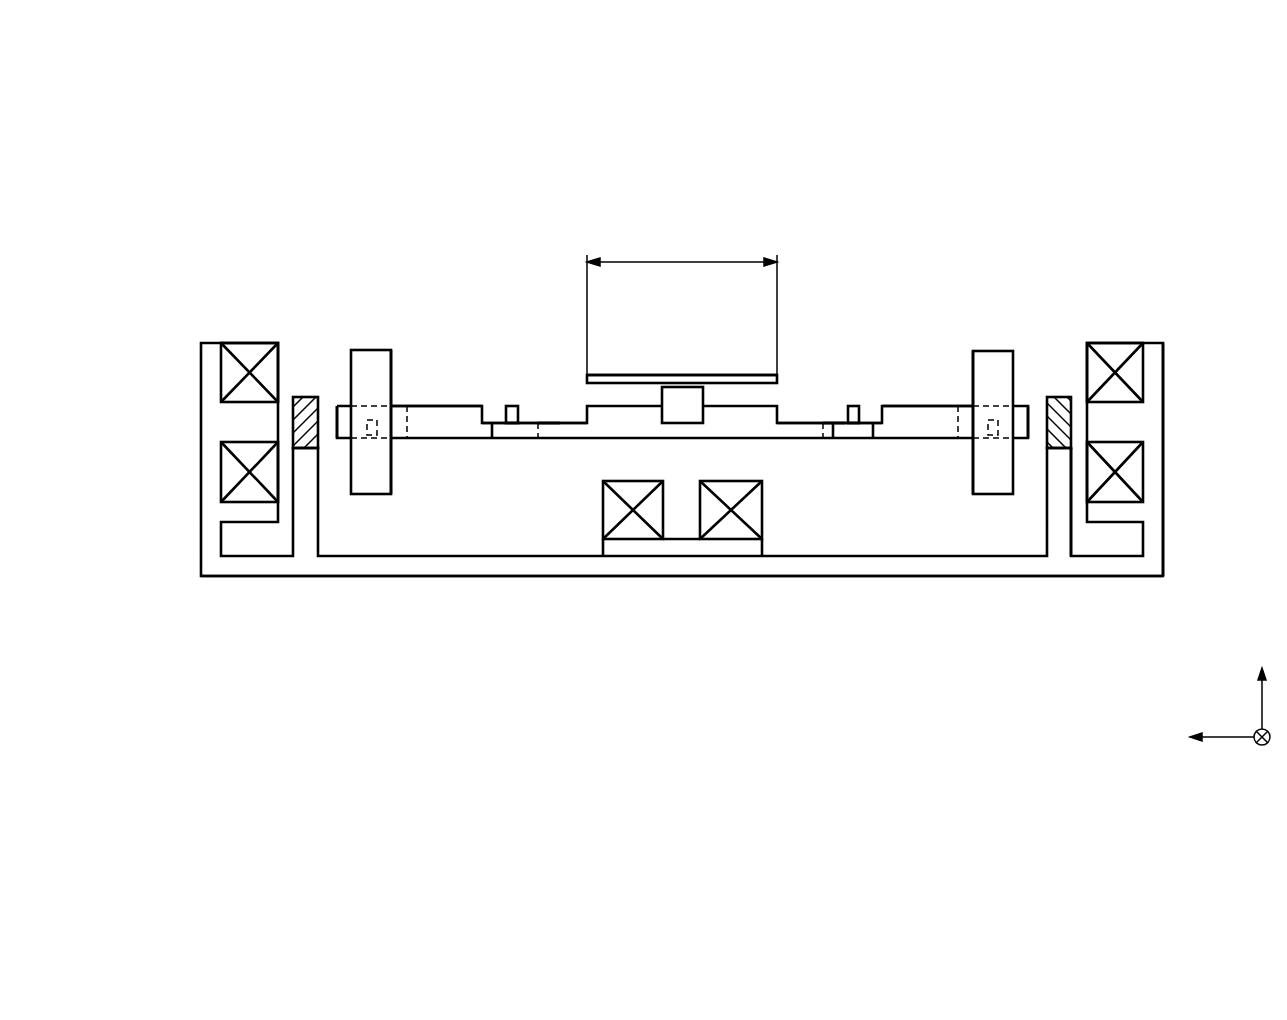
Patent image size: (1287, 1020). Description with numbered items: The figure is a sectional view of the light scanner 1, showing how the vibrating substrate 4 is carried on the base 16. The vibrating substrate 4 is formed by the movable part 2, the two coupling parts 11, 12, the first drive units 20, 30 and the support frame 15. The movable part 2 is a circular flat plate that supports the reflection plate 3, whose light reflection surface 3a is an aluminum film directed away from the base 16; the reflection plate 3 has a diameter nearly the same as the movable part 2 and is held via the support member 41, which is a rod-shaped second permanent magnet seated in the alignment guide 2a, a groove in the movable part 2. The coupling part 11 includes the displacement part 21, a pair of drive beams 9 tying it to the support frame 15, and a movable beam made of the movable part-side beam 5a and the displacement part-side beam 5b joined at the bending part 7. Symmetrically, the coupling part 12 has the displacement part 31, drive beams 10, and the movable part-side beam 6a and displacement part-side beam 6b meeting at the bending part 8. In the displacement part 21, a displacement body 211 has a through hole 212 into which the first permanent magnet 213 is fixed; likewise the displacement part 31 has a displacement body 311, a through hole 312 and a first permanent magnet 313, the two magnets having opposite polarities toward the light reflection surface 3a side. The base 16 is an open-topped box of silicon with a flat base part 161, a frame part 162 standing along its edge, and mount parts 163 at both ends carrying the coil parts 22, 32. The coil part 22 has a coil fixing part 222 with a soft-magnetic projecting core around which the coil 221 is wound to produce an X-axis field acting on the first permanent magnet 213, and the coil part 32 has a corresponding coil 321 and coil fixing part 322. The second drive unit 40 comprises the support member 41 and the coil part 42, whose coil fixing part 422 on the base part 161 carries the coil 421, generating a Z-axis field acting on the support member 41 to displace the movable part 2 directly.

The light scanner 1 is at (1122, 179).
The movable part 2 is at (682, 310).
The alignment guide 2a is at (683, 410).
The reflection plate 3 is at (682, 349).
The light reflection surface 3a is at (680, 375).
The vibrating substrate 4 is at (682, 247).
The movable part-side beam 5a is at (555, 430).
The displacement part-side beam 5b is at (462, 414).
The movable part-side beam 6a is at (807, 430).
The displacement part-side beam 6b is at (920, 418).
The bending part 7 is at (512, 395).
The bending part 8 is at (853, 395).
The drive beams 9 is at (363, 433).
The drive beams 10 is at (993, 438).
The coupling part 11 is at (553, 324).
The coupling part 12 is at (830, 324).
The support frame 15 is at (307, 397).
The base 16 is at (965, 668).
The base part 161 is at (988, 567).
The frame part 162 is at (1063, 527).
The mount part 163 is at (1148, 511).
The first drive unit 20 is at (392, 252).
The displacement part 21 is at (378, 442).
The displacement body 211 is at (343, 415).
The through hole 212 is at (383, 440).
The first permanent magnet 213 is at (392, 387).
The coil part 22 is at (207, 377).
The coil 221 is at (248, 392).
The coil fixing part 222 is at (212, 389).
The first drive unit 30 is at (1138, 252).
The displacement part 31 is at (986, 438).
The displacement body 311 is at (1020, 412).
The through hole 312 is at (985, 435).
The first permanent magnet 313 is at (972, 387).
The coil part 32 is at (1159, 377).
The coil 321 is at (1132, 468).
The coil fixing part 322 is at (1157, 380).
The second drive unit 40 is at (708, 664).
The support member 41 is at (662, 530).
The coil part 42 is at (757, 624).
The coil 421 is at (720, 533).
The coil fixing part 422 is at (723, 548).